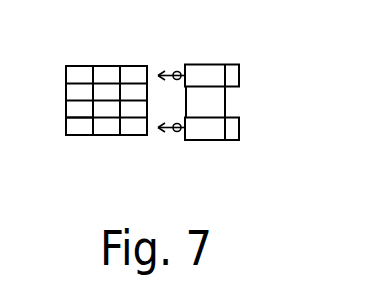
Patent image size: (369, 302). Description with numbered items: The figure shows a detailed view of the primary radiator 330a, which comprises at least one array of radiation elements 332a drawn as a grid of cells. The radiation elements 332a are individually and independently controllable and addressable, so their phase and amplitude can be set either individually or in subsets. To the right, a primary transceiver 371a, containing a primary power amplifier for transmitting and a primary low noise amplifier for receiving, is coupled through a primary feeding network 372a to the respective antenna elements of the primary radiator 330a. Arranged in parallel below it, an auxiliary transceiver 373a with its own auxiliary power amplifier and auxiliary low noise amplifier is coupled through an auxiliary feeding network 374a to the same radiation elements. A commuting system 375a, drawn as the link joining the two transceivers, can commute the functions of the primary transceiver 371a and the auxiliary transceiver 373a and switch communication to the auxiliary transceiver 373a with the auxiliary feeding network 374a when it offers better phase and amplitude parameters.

The primary radiator 330a is at (51, 104).
The radiation elements 332a is at (75, 134).
The primary transceiver 371a is at (221, 70).
The primary feeding network 372a is at (177, 71).
The auxiliary transceiver 373a is at (222, 131).
The auxiliary feeding network 374a is at (176, 132).
The commuting system 375a is at (220, 103).